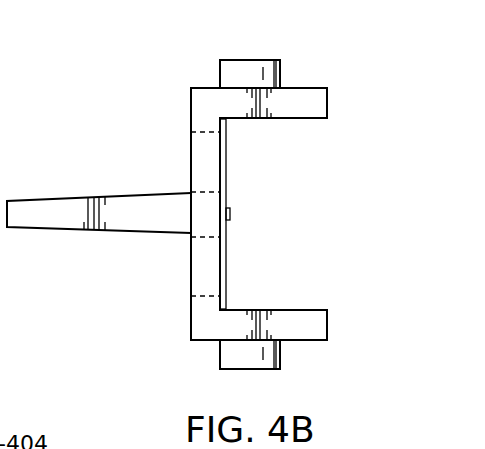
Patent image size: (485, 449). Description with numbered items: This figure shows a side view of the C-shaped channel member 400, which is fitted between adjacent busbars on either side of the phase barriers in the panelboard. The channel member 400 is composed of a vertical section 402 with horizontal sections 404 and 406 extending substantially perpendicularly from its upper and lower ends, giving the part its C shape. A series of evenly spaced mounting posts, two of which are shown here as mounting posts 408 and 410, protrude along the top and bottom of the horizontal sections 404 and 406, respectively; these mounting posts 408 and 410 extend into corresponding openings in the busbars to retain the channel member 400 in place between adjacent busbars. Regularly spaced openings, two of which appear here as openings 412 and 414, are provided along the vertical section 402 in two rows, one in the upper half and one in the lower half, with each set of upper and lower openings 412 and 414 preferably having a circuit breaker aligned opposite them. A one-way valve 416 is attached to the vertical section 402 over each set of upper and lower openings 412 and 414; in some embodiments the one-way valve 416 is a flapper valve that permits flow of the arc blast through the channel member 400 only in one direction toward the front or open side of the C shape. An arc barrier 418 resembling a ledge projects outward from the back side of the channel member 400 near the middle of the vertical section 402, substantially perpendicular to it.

The channel member 400 is at (205, 88).
The vertical section 402 is at (190, 192).
The horizontal section 404 is at (328, 102).
The horizontal section 406 is at (328, 325).
The mounting post 408 is at (250, 60).
The mounting post 410 is at (220, 353).
The opening 412 is at (189, 160).
The opening 414 is at (189, 270).
The one-way valve 416 is at (228, 195).
The arc barrier 418 is at (67, 199).